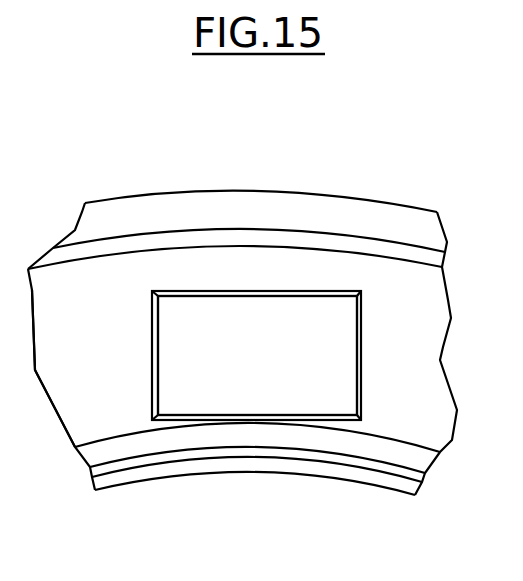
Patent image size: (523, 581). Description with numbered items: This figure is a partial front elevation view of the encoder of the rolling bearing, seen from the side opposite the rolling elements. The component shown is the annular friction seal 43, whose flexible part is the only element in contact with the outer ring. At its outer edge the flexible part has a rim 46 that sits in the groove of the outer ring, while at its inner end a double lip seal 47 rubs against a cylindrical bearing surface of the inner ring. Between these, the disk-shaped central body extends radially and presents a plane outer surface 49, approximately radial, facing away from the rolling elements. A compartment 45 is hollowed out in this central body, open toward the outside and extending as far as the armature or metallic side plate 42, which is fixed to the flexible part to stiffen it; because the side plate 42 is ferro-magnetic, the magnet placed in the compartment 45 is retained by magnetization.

The armature or metallic side plate 42 is at (293, 365).
The annular friction seal 43 is at (354, 188).
The compartment 45 is at (199, 412).
The rim 46 is at (248, 208).
The double lip seal 47 is at (248, 463).
The plane outer surface 49 is at (100, 333).